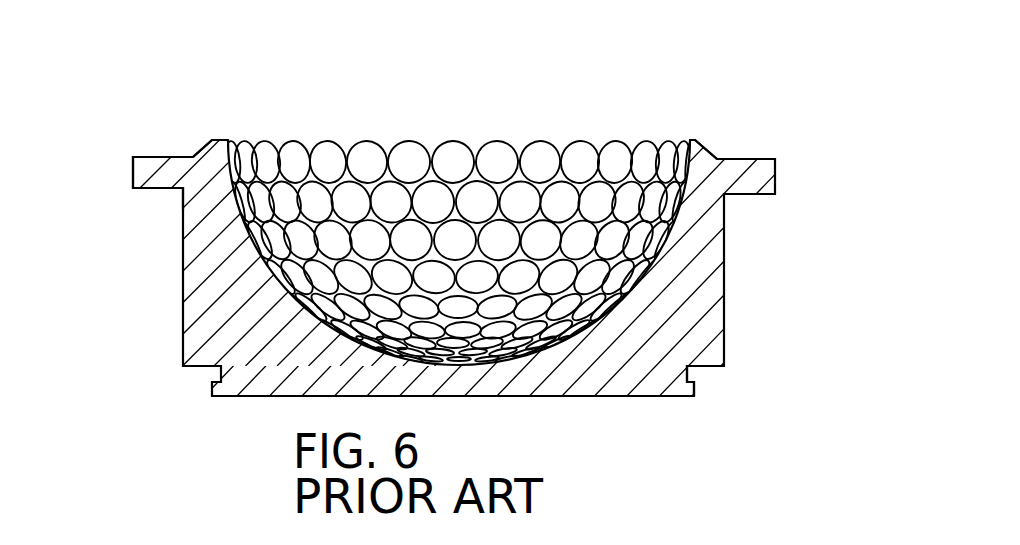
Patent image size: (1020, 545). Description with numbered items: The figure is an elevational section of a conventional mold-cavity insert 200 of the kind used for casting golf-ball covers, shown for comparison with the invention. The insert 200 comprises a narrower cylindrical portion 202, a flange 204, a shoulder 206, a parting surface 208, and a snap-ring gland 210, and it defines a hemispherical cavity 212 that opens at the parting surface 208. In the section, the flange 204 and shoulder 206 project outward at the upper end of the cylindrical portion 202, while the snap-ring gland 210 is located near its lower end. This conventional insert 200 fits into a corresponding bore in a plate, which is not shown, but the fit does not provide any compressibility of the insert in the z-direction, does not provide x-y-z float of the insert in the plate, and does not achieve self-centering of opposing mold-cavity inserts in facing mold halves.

The mold-cavity insert 200 is at (695, 85).
The narrower cylindrical portion 202 is at (724, 281).
The flange 204 is at (133, 173).
The shoulder 206 is at (155, 190).
The parting surface 208 is at (224, 140).
The snap-ring gland 210 is at (690, 377).
The hemispherical cavity 212 is at (478, 141).